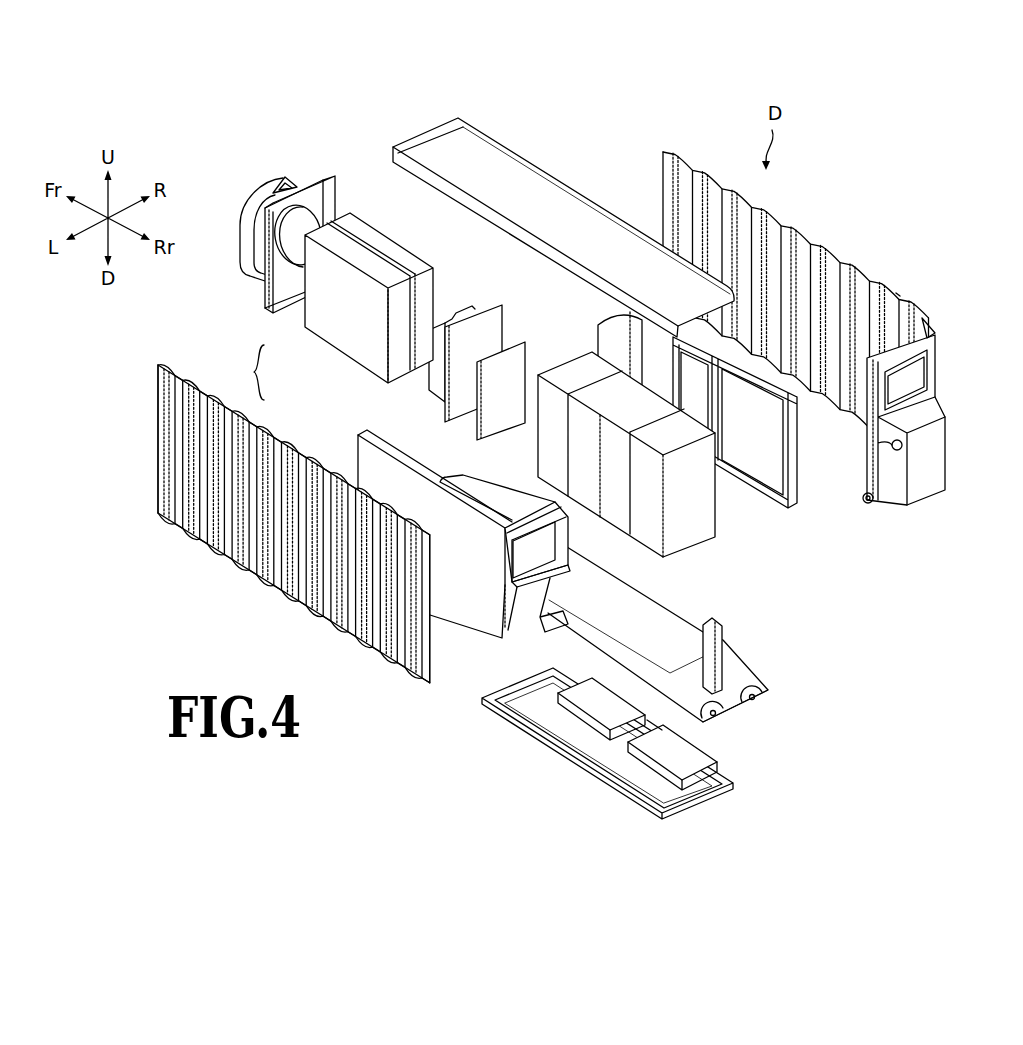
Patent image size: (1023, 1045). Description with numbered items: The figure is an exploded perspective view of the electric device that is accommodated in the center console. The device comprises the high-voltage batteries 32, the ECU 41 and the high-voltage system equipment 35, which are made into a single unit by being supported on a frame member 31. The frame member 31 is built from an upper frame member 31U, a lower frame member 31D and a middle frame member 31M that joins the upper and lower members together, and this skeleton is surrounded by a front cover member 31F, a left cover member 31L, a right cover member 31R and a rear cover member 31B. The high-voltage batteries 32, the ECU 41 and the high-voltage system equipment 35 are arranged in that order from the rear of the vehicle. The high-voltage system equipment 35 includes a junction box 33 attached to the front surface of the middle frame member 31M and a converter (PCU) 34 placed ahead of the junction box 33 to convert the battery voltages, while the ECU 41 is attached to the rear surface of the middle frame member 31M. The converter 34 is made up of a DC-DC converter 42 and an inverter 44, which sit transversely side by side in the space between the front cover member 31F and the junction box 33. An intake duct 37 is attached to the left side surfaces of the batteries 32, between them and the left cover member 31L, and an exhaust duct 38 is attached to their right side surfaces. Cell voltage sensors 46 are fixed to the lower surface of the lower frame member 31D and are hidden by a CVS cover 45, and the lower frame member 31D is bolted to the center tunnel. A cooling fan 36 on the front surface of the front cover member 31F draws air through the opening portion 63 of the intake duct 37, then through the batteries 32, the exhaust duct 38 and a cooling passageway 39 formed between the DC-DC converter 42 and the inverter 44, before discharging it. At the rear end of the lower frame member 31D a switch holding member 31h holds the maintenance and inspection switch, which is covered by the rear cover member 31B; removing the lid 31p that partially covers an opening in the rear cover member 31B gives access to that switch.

The frame member 31 is at (896, 293).
The rear cover member 31B is at (930, 457).
The lower frame member 31D is at (732, 672).
The front cover member 31F is at (315, 193).
The left cover member 31L is at (173, 443).
The middle frame member 31M is at (493, 327).
The right cover member 31R is at (801, 243).
The upper frame member 31U is at (560, 212).
The switch holding member 31h is at (708, 625).
The lid 31p is at (887, 482).
The high-voltage batteries 32 is at (613, 490).
The junction box 33 is at (437, 353).
The converter (PCU) 34 is at (341, 320).
The high-voltage system equipment 35 is at (247, 372).
The cooling fan 36 is at (267, 181).
The intake duct 37 is at (505, 556).
The exhaust duct 38 is at (797, 453).
The cooling passageway 39 is at (352, 242).
The ECU 41 is at (493, 427).
The DC-DC converter 42 is at (397, 255).
The inverter 44 is at (323, 283).
The CVS cover 45 is at (617, 790).
The cell voltage sensors (CVS) 46 is at (663, 752).
The opening portion 63 is at (537, 558).